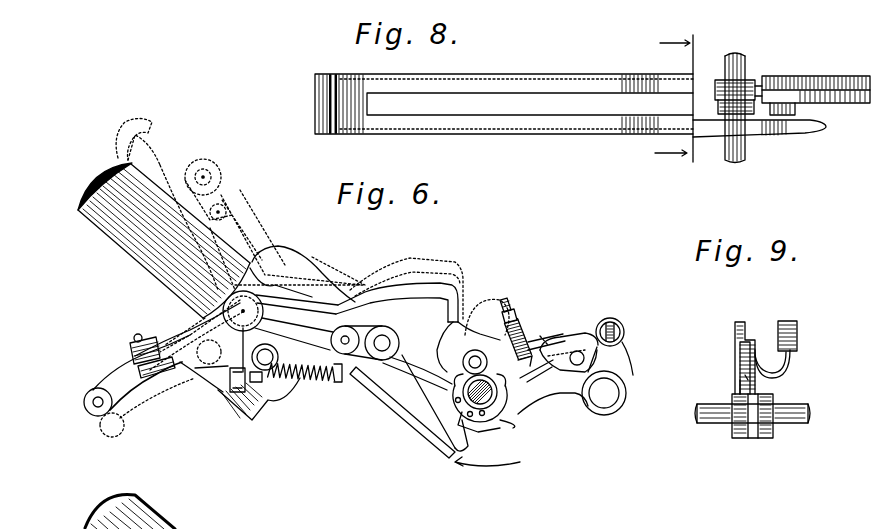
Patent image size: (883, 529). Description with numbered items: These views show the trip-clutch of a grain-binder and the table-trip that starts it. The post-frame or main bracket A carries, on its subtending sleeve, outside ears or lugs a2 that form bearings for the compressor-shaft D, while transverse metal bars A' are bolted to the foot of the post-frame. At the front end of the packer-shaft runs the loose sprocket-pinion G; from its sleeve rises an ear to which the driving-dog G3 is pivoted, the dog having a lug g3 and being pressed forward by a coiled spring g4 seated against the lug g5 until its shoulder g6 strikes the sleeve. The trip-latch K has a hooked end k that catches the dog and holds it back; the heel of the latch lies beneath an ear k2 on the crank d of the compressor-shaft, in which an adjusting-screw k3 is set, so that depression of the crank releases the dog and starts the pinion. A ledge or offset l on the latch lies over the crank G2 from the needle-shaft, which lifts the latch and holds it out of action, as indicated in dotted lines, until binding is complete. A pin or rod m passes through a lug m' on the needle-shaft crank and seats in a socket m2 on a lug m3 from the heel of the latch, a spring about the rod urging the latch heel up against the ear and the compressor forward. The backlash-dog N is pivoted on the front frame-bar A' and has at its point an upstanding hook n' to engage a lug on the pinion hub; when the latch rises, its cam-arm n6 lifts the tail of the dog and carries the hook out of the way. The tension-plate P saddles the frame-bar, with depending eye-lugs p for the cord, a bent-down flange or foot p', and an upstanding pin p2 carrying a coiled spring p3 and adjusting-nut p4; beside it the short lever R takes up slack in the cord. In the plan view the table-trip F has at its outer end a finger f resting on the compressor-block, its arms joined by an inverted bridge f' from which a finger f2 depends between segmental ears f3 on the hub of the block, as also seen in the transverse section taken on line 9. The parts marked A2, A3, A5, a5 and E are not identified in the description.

In FIG. 6, the post-frame A is at (164, 240).
In FIG. 6, the cam-arm n6 is at (262, 292).
In FIG. 6, the frame pivot A3 is at (278, 320).
In FIG. 6, the ledge l is at (290, 306).
In FIG. 6, the trip-latch K is at (400, 290).
In FIG. 6, the hooked end k is at (460, 302).
In FIG. 6, the ear k2 is at (130, 350).
In FIG. 6, the adjusting-screw k3 is at (152, 360).
In FIG. 6, the crank d is at (156, 386).
In FIG. 6, the ears a2 is at (192, 372).
In FIG. 6, the pin m is at (271, 382).
In FIG. 6, the lug m' is at (312, 380).
In FIG. 6, the socket m2 is at (258, 383).
In FIG. 6, the lug m3 is at (219, 352).
In FIG. 6, the crank G2 is at (365, 343).
In FIG. 6, the backlash-dog N is at (402, 412).
In FIG. 6, the lug g3 is at (417, 374).
In FIG. 6, the coiled spring g4 is at (428, 401).
In FIG. 6, the upstanding hook n' is at (459, 443).
In FIG. 6, the sprocket-pinion G is at (478, 428).
In FIG. 6, the driving-dog G3 is at (473, 335).
In FIG. 6, the lug g5 is at (505, 405).
In FIG. 6, the shoulder g6 is at (475, 353).
In FIG. 6, the upstanding pin p2 is at (504, 298).
In FIG. 6, the coiled spring p3 is at (526, 330).
In FIG. 6, the adjusting-nut p4 is at (515, 312).
In FIG. 6, the lever R is at (556, 330).
In FIG. 6, the tension-plate P is at (586, 340).
In FIG. 6, the eye-lugs p is at (589, 361).
In FIG. 6, the flange p' is at (536, 376).
In FIG. 6, the pivot ring A2 is at (624, 332).
In FIG. 6, the neck a5 is at (628, 362).
In FIG. 6, the ring A5 is at (612, 414).
In FIG. 6, the transverse metal bars A' is at (553, 416).
In FIG. 8, the table-trip F is at (570, 117).
In FIG. 9, the table-trip F is at (790, 320).
In FIG. 8, the section line 9 is at (675, 98).
In FIG. 8, the compressor-shaft D is at (737, 118).
In FIG. 9, the compressor-shaft D is at (762, 415).
In FIG. 8, the rack E is at (825, 75).
In FIG. 9, the finger f is at (745, 350).
In FIG. 9, the inverted bridge f' is at (782, 370).
In FIG. 8, the finger f2 is at (716, 90).
In FIG. 9, the finger f2 is at (738, 380).
In FIG. 8, the segmental ears f3 is at (703, 130).
In FIG. 9, the segmental ears f3 is at (740, 440).